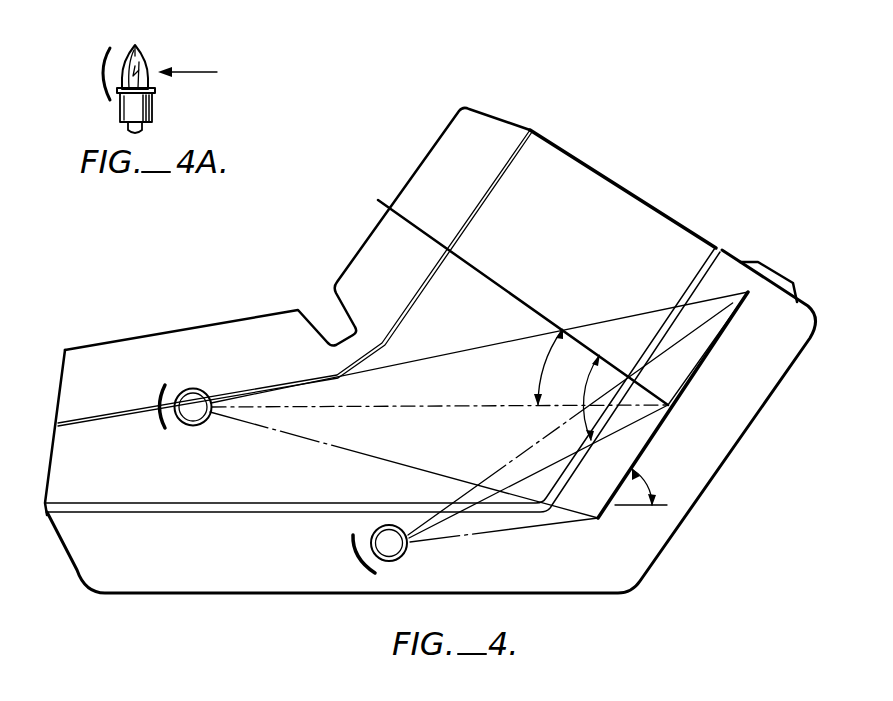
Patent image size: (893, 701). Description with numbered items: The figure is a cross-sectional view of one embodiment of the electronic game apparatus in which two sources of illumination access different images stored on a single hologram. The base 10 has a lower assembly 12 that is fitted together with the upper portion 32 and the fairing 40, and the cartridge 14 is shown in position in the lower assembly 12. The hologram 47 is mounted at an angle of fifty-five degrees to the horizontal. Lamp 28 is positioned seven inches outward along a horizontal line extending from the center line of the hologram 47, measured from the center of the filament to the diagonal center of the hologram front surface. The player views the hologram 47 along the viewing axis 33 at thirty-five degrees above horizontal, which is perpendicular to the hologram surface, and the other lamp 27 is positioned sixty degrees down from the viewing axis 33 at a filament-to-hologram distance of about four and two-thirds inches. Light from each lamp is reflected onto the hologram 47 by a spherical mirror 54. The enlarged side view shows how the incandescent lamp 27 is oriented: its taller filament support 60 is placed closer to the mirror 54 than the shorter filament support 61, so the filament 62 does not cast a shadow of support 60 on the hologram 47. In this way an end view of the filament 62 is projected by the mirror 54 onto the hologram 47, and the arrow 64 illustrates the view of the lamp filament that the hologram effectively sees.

In FIG. 4, the base 10 is at (733, 552).
In FIG. 4, the lower assembly 12 is at (718, 445).
In FIG. 4, the cartridge 14 is at (776, 284).
In FIG. 4, the lamp 27 is at (397, 562).
In FIG. 4A, the lamp 27 is at (120, 116).
In FIG. 4, the lamp 28 is at (200, 390).
In FIG. 4, the upper portion 32 is at (586, 176).
In FIG. 4, the viewing axis 33 is at (382, 186).
In FIG. 4, the fairing 40 is at (482, 124).
In FIG. 4, the hologram 47 is at (703, 360).
In FIG. 4, the mirror 54 is at (156, 392).
In FIG. 4A, the mirror 54 is at (99, 72).
In FIG. 4A, the taller filament support 60 is at (134, 58).
In FIG. 4A, the shorter filament support 61 is at (148, 78).
In FIG. 4A, the filament 62 is at (149, 53).
In FIG. 4A, the arrow 64 is at (196, 73).